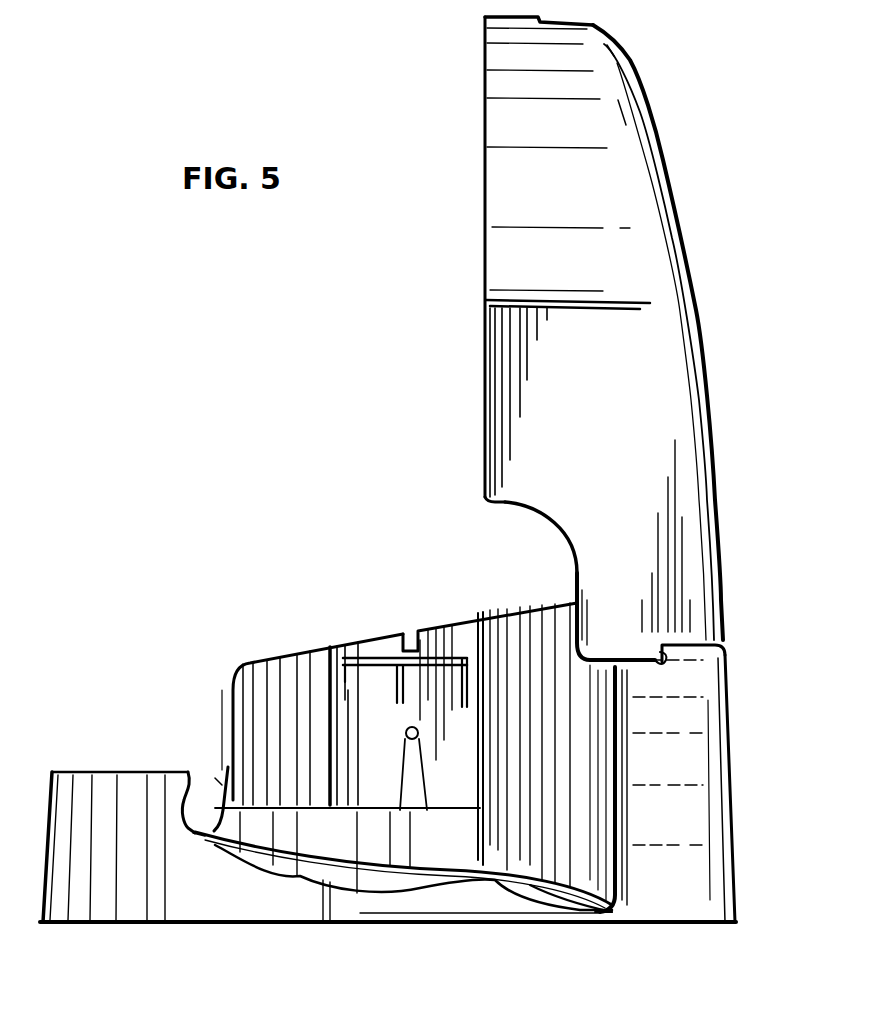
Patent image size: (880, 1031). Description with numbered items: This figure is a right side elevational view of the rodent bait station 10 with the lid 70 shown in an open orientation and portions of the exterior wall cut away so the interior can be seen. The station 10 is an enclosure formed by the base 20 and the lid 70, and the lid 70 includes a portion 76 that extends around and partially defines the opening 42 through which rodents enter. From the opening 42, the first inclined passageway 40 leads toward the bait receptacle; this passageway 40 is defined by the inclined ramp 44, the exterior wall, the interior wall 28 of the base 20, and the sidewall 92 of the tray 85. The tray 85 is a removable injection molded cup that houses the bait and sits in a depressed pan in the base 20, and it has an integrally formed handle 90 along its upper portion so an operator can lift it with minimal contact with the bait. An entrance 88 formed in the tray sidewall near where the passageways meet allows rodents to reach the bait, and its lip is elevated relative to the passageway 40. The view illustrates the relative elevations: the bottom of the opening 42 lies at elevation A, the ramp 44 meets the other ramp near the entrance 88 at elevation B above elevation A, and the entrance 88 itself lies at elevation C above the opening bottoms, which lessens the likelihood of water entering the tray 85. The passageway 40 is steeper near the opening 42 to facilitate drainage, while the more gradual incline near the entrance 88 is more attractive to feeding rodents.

The rodent bait station 10 is at (262, 372).
The lid 70 is at (665, 137).
The lid portion 76 is at (563, 533).
The base 20 is at (667, 890).
The interior wall 28 is at (580, 745).
The sidewall of tray 92 is at (290, 675).
The entrance 88 is at (222, 775).
The tray 85 is at (365, 626).
The handle 90 is at (447, 657).
The first inclined passageway 40 is at (530, 850).
The opening 42 is at (560, 902).
The inclined ramp 44 is at (402, 863).
The elevation A is at (598, 912).
The elevation B is at (193, 833).
The elevation C is at (218, 780).